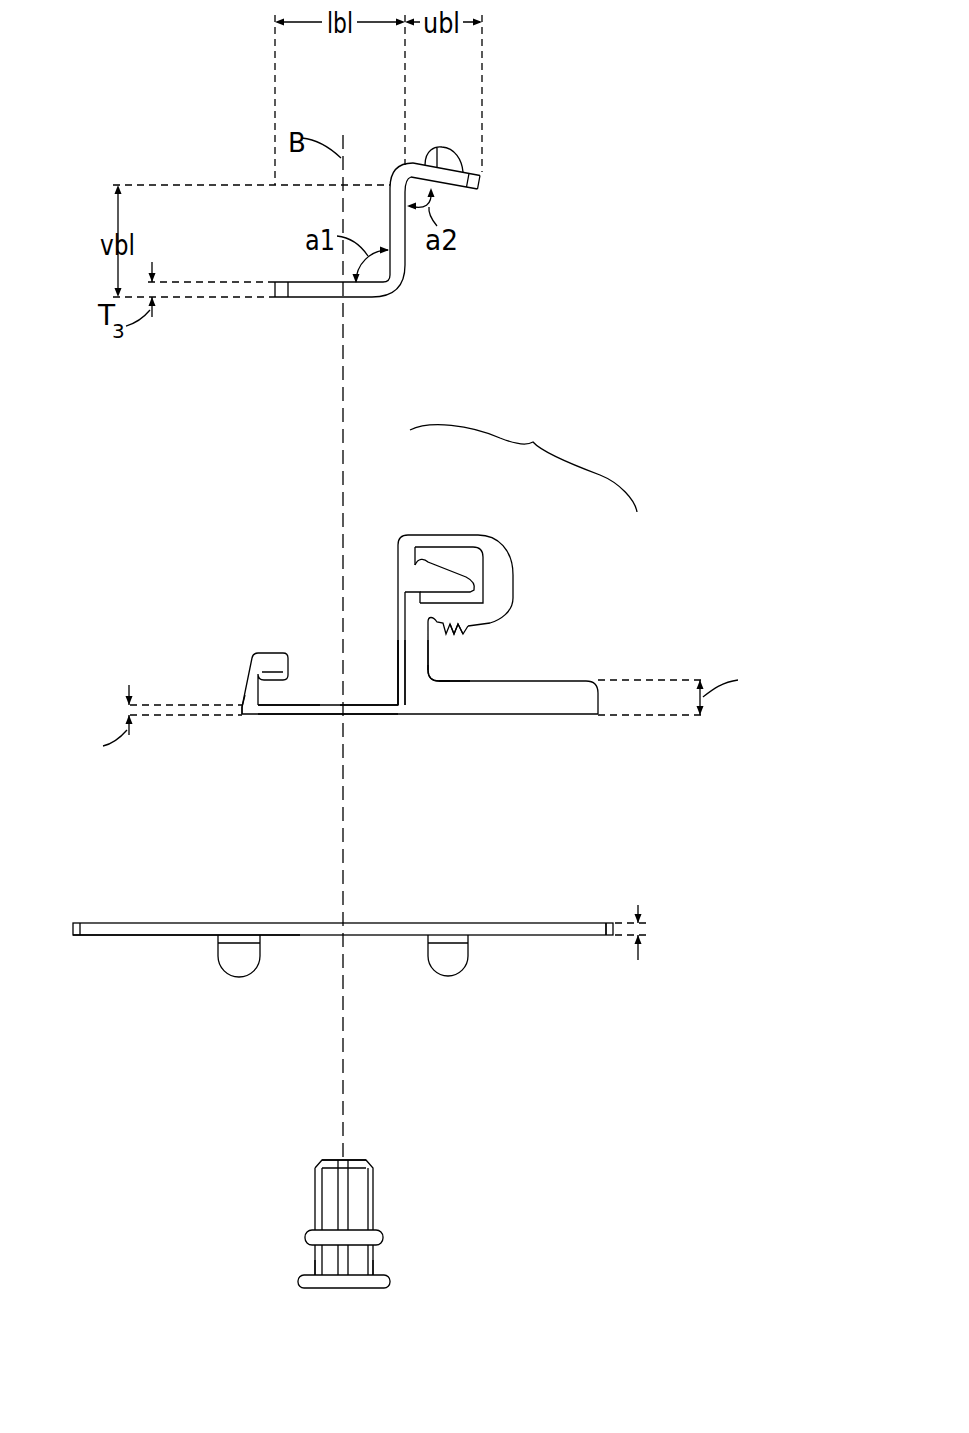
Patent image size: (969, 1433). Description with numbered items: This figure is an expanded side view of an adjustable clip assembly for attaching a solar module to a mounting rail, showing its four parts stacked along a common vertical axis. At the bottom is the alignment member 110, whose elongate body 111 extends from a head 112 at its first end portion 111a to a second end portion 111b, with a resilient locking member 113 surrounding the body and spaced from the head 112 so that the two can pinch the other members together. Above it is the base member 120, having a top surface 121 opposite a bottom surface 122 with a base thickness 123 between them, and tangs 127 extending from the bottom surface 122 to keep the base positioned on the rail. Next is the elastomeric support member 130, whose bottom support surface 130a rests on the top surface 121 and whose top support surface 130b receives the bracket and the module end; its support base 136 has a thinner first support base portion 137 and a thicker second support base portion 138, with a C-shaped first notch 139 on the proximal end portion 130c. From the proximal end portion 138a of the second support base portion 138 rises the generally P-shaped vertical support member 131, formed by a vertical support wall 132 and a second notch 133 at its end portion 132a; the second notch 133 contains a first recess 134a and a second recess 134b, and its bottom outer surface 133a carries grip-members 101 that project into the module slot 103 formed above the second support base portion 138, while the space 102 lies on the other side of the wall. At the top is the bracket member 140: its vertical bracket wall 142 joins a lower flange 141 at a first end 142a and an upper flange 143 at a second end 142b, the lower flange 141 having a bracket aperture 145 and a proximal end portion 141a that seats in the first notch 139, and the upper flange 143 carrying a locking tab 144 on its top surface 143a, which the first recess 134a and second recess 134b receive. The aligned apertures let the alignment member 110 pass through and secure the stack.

The grip-members 101 is at (473, 630).
The space 102 is at (392, 692).
The module slot 103 is at (492, 677).
The alignment member 110 is at (494, 1095).
The elongate body 111 is at (357, 1212).
The first end portion 111a is at (312, 1277).
The second end portion 111b is at (356, 1160).
The head 112 is at (379, 1290).
The resilient locking member 113 is at (385, 1240).
The base member 120 is at (682, 856).
The top surface 121 is at (98, 922).
The bottom surface 122 is at (122, 937).
The base thickness 123 is at (641, 952).
The tangs 127 is at (240, 966).
The elastomeric support member 130 is at (682, 456).
The bottom support surface 130a is at (538, 716).
The top support surface 130b is at (292, 703).
The proximal end portion 130c is at (246, 716).
The vertical support member 131 is at (523, 461).
The vertical support wall 132 is at (399, 617).
The end portion 132a is at (400, 590).
The second notch 133 is at (506, 575).
The bottom outer surface 133a is at (503, 620).
The first recess 134a is at (472, 585).
The second recess 134b is at (446, 535).
The support base 136 is at (396, 713).
The first support base portion 137 is at (308, 717).
The second support base portion 138 is at (592, 684).
The proximal end portion 138a is at (421, 692).
The first notch 139 is at (248, 674).
The bracket member 140 is at (583, 30).
The lower flange 141 is at (280, 282).
The proximal end portion 141a is at (276, 290).
The vertical bracket wall 142 is at (407, 257).
The first end 142a is at (398, 292).
The second end 142b is at (395, 168).
The upper flange 143 is at (453, 192).
The top surface 143a is at (481, 172).
The locking tab 144 is at (445, 147).
The bracket aperture 145 is at (336, 298).